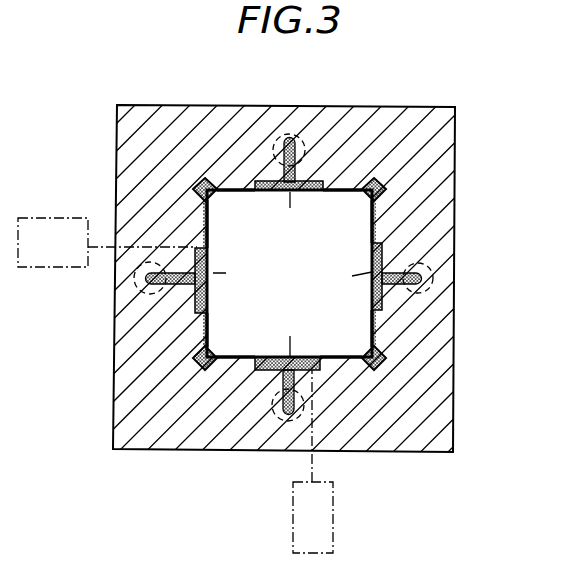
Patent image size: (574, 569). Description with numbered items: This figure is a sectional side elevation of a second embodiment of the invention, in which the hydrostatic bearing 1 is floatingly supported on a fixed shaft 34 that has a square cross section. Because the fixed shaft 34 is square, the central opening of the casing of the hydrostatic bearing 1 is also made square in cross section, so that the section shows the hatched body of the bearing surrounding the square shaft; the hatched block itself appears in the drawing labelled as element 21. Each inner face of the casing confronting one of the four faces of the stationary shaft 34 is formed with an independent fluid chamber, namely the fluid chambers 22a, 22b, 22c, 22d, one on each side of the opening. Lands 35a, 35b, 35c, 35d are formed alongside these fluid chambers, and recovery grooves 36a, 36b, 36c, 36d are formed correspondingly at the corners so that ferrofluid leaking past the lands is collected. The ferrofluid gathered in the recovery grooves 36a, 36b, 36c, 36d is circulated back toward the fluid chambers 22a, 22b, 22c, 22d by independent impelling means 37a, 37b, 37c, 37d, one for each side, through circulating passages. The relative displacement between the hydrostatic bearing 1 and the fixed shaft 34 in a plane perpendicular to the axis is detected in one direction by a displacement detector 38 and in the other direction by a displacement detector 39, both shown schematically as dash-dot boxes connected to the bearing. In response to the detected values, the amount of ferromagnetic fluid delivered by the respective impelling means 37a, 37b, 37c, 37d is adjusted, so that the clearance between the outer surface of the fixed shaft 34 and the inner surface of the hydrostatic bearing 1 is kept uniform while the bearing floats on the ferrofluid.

The hydrostatic bearing 1 is at (468, 120).
The body block 21 is at (429, 116).
The fluid chamber 22a is at (322, 182).
The fluid chamber 22b is at (383, 256).
The fluid chamber 22c is at (262, 370).
The fluid chamber 22d is at (196, 300).
The fixed shaft 34 is at (355, 300).
The land 35a is at (228, 187).
The land 35b is at (376, 224).
The land 35c is at (202, 370).
The land 35d is at (204, 206).
The recovery groove 36a is at (384, 188).
The recovery groove 36b is at (384, 364).
The recovery groove 36c is at (198, 364).
The recovery groove 36d is at (197, 183).
The impelling means 37a is at (287, 133).
The impelling means 37b is at (434, 282).
The impelling means 37c is at (275, 420).
The impelling means 37d is at (134, 284).
The displacement detector 38 is at (18, 236).
The displacement detector 39 is at (336, 524).